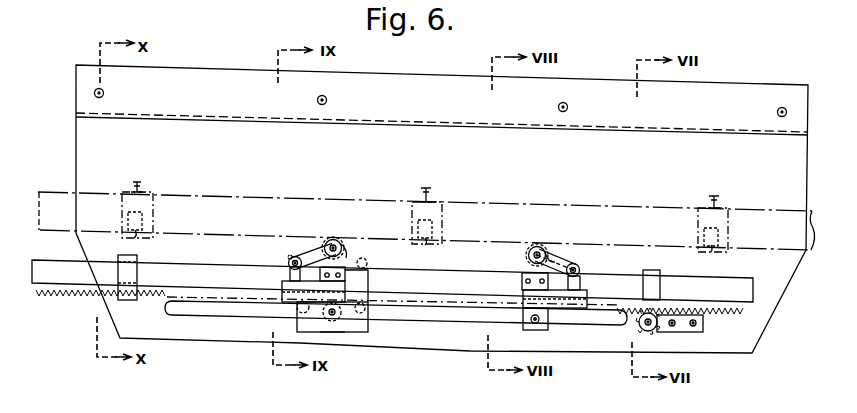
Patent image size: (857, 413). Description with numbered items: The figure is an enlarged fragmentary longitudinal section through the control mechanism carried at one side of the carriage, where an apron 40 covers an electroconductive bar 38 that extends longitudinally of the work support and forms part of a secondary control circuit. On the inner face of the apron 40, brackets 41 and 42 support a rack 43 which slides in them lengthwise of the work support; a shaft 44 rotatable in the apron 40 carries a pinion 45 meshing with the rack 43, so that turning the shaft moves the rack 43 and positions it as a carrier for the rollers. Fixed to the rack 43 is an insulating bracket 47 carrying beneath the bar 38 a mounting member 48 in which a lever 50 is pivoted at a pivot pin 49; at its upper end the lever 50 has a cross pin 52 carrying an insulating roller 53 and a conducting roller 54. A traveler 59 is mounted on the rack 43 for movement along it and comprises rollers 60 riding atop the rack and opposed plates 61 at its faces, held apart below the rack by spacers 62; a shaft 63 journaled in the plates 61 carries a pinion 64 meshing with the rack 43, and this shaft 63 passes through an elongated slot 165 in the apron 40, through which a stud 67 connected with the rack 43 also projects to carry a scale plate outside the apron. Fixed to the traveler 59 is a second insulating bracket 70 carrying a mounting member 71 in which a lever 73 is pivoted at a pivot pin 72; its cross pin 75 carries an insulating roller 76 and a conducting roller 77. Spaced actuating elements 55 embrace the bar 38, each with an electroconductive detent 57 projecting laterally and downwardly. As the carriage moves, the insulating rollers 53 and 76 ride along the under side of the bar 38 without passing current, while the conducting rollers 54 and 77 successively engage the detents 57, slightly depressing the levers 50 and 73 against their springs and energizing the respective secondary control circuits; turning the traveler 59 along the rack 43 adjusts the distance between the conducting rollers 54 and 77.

The bar 38 is at (620, 210).
The apron 40 is at (754, 353).
The bracket 41 is at (134, 270).
The bracket 42 is at (656, 280).
The rack 43 is at (720, 284).
The shaft 44 is at (640, 327).
The pinion 45 is at (662, 332).
The bracket 47 is at (565, 308).
The mounting member 48 is at (582, 285).
The pivot pin 49 is at (580, 265).
The lever 50 is at (556, 260).
The cross pin 52 is at (530, 258).
The insulating roller 53 is at (530, 250).
The conducting roller 54 is at (538, 252).
The actuating element 55 is at (152, 190).
The detent 57 is at (131, 240).
The traveler 59 is at (372, 282).
The roller 60 is at (292, 256).
The plate 61 is at (372, 274).
The spacer 62 is at (298, 311).
The shaft 63 is at (336, 314).
The pinion 64 is at (345, 335).
The stud 67 is at (520, 330).
The bracket 70 is at (282, 284).
The mounting member 71 is at (290, 275).
The pivot pin 72 is at (290, 259).
The lever 73 is at (318, 252).
The cross pin 75 is at (346, 246).
The insulating roller 76 is at (340, 238).
The conducting roller 77 is at (333, 245).
The elongated slot 165 is at (440, 316).